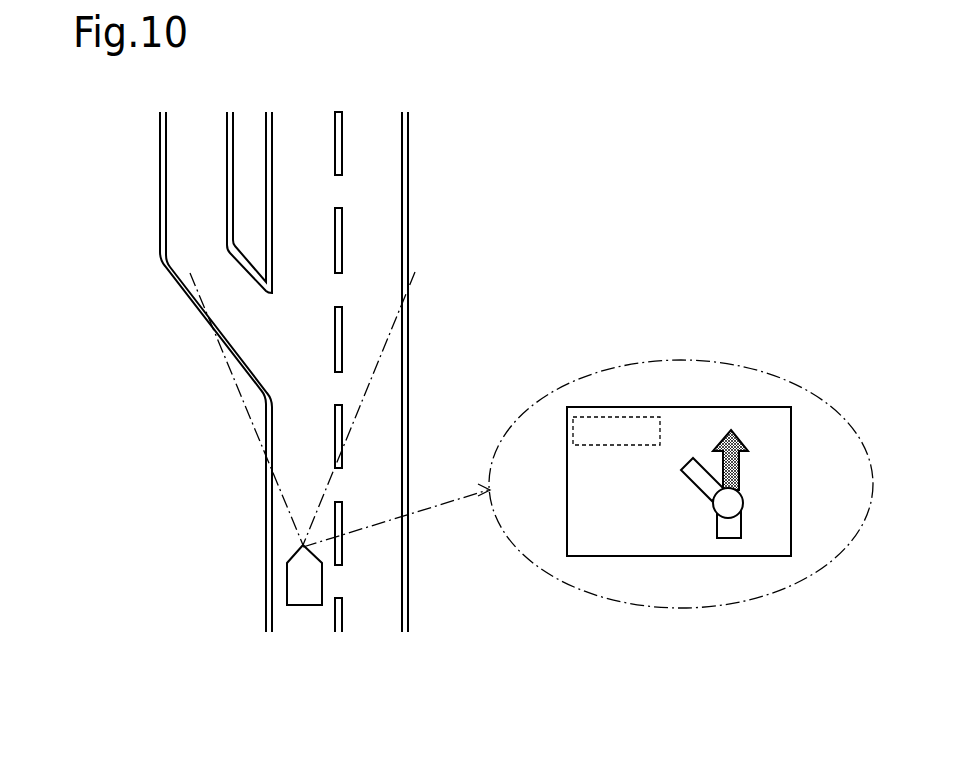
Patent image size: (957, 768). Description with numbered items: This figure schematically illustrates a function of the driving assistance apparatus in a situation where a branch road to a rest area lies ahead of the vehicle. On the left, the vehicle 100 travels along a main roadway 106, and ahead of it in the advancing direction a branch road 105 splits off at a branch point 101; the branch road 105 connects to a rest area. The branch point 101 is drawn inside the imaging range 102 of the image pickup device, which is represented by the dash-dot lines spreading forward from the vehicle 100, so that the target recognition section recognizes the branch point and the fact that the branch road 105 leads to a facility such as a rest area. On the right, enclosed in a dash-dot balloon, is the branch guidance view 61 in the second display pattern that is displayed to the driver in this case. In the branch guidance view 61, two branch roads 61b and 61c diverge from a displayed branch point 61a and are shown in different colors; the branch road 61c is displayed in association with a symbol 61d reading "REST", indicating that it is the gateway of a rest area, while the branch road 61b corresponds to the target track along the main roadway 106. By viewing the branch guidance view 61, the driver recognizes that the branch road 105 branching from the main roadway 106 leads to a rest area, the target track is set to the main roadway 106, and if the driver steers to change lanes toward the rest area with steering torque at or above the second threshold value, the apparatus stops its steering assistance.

The vehicle 100 is at (287, 577).
The branch point 101 is at (272, 338).
The imaging range 102 is at (370, 385).
The branch road 105 is at (181, 187).
The main roadway 106 is at (385, 187).
The branch guidance view 61 is at (567, 487).
The branch point 61a is at (743, 502).
The branch road 61b is at (741, 460).
The branch road 61c is at (688, 482).
The symbol 61d is at (567, 428).